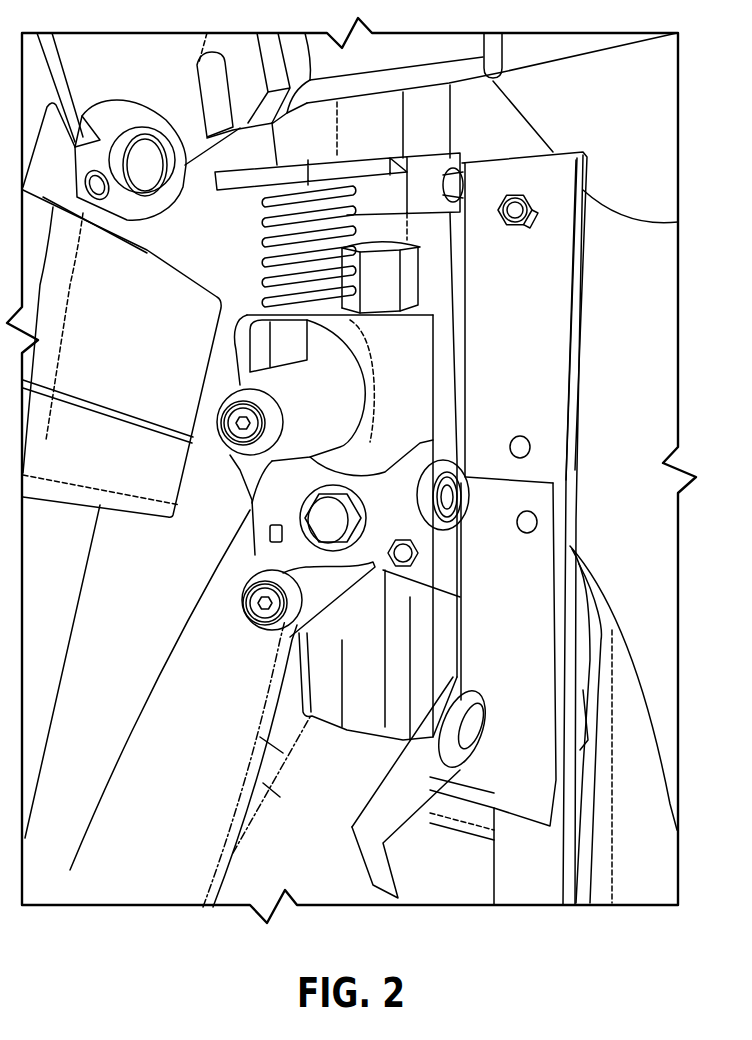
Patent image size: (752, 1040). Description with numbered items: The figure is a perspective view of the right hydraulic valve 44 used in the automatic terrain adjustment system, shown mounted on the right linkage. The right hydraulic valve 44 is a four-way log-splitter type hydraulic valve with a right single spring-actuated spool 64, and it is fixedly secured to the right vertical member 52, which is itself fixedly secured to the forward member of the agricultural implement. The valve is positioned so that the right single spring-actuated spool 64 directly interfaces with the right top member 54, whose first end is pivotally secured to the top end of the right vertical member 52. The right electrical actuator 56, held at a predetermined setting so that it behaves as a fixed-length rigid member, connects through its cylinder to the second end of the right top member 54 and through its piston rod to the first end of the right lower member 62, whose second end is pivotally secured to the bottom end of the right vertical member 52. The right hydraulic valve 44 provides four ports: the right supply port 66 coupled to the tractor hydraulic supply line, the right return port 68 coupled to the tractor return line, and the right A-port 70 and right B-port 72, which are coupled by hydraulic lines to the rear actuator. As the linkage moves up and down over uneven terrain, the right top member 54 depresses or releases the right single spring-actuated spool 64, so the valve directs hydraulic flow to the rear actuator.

The right hydraulic valve 44 is at (448, 376).
The right vertical member 52 is at (398, 627).
The right top member 54 is at (433, 70).
The right electrical actuator 56 is at (172, 292).
The right lower member 62 is at (248, 882).
The right single spring-actuated spool 64 is at (272, 247).
The right supply port 66 is at (466, 500).
The right return port 68 is at (222, 432).
The right A-port 70 is at (232, 432).
The right B-port 72 is at (250, 612).